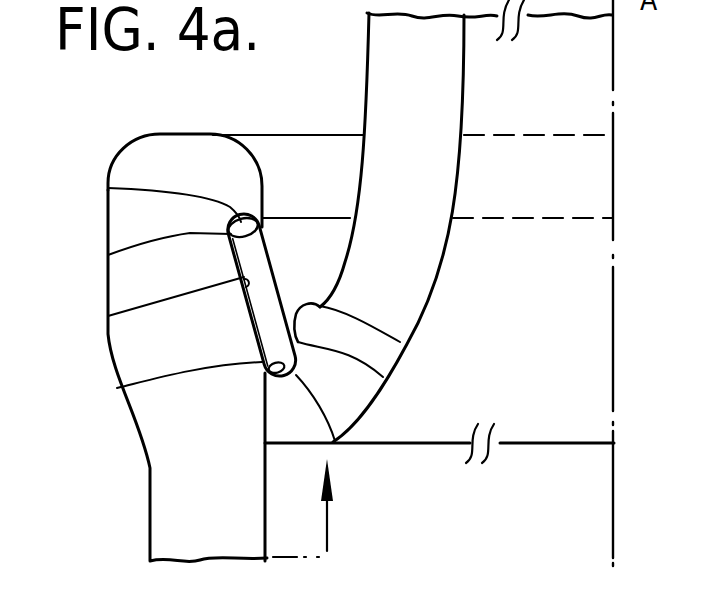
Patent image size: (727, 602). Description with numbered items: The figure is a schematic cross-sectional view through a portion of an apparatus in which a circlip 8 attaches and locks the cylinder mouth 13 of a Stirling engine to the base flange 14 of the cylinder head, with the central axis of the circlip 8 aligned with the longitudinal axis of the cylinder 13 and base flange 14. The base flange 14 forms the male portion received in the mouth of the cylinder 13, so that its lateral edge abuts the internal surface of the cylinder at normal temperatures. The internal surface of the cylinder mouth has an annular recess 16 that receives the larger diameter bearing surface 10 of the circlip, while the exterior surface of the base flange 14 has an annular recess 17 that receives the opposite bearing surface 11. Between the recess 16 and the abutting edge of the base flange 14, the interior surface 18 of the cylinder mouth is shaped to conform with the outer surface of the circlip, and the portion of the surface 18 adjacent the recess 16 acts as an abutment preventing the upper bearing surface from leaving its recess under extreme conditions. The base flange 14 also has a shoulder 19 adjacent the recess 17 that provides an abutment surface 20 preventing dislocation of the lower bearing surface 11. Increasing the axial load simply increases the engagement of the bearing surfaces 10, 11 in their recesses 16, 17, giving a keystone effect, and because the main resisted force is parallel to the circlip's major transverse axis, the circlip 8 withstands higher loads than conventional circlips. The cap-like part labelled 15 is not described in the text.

The circlip 8 is at (264, 262).
The larger diameter bearing surface 10 is at (110, 255).
The opposite bearing surface 11 is at (118, 388).
The cylinder mouth 13 is at (172, 408).
The base flange of the cylinder head 14 is at (414, 262).
The cap 15 is at (266, 150).
The annular recess 16 is at (110, 189).
The annular recess 17 is at (333, 442).
The interior surface 18 is at (110, 316).
The shoulder 19 is at (400, 342).
The abutment surface 20 is at (383, 377).